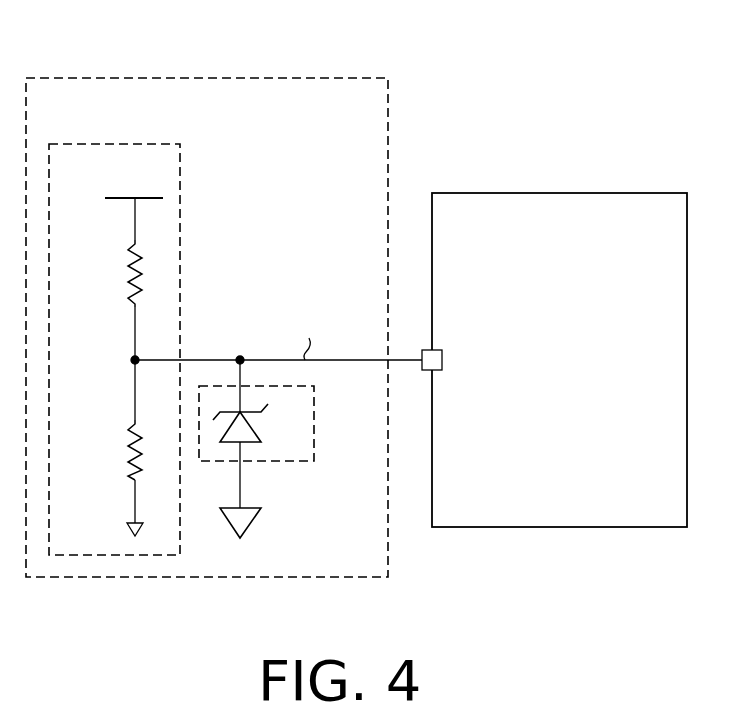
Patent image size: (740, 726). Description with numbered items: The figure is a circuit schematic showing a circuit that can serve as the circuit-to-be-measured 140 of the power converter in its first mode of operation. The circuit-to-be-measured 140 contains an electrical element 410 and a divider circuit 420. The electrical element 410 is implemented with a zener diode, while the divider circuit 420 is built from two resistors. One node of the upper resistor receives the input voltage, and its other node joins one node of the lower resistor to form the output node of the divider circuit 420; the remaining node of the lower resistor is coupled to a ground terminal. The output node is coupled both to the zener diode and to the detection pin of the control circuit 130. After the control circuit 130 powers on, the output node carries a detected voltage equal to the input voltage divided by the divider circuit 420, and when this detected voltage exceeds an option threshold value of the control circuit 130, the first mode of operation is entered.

The circuit-to-be-measured 140 is at (222, 78).
The divider circuit 420 is at (122, 144).
The electrical element 410 is at (314, 437).
The control circuit 130 is at (536, 193).